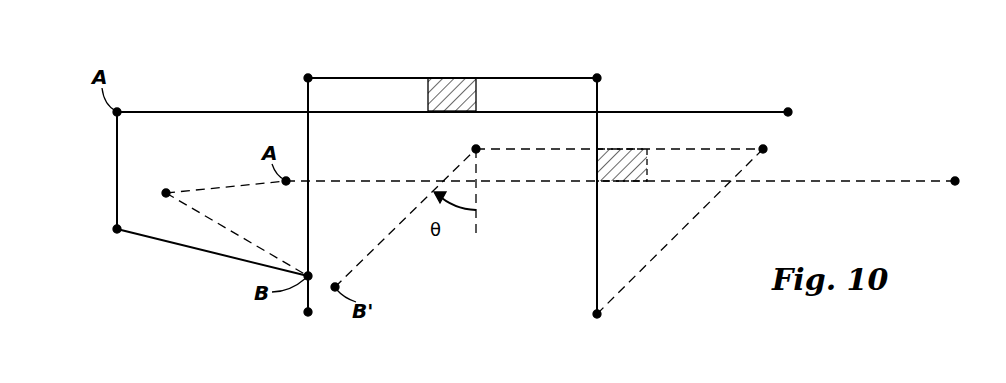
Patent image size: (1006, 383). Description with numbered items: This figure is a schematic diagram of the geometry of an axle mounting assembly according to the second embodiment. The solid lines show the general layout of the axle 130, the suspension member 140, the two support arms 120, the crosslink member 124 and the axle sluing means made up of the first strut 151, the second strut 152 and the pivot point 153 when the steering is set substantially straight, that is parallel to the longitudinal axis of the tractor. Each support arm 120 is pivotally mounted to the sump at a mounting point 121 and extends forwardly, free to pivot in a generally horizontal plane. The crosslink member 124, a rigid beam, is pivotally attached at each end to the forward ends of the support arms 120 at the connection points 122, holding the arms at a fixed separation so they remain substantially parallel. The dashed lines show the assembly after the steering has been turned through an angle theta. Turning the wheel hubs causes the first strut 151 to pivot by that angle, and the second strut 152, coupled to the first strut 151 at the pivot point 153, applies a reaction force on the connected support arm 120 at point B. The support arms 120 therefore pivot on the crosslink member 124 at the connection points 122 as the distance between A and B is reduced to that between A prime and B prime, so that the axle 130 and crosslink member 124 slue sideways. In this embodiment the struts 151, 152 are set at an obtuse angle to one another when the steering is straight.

The support arm 120 is at (306, 102).
The mounting point 121 is at (308, 314).
The connection point 122 is at (306, 77).
The crosslink member 124 is at (538, 77).
The axle 130 is at (712, 110).
The suspension member 140 is at (436, 95).
The first strut 151 is at (116, 183).
The second strut 152 is at (196, 250).
The pivot point 153 is at (116, 232).